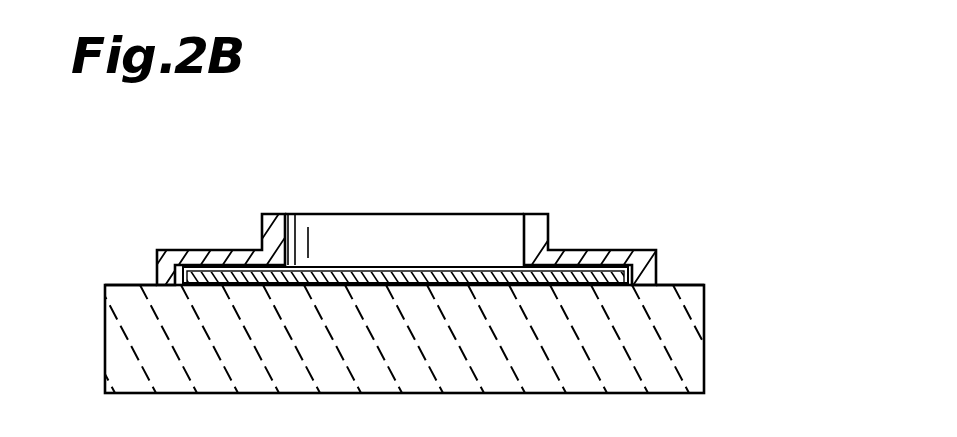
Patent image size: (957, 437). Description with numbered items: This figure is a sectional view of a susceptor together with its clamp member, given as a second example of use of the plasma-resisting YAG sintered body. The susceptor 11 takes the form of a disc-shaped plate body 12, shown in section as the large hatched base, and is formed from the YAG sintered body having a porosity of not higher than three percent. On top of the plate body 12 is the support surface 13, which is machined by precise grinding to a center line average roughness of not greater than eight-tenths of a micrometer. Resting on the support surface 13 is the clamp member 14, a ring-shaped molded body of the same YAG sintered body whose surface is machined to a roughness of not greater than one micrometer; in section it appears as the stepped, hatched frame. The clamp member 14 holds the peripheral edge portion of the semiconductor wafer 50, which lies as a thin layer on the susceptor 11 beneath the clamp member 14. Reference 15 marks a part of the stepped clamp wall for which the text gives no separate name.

The susceptor 11 is at (716, 285).
The plate body 12 is at (688, 331).
The support surface 13 is at (123, 285).
The clamp member 14 is at (555, 211).
The frame wall 15 is at (270, 232).
The semiconductor wafer 50 is at (395, 274).